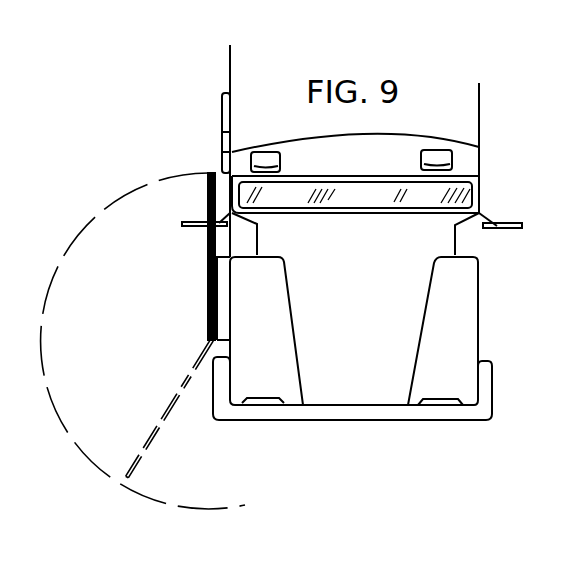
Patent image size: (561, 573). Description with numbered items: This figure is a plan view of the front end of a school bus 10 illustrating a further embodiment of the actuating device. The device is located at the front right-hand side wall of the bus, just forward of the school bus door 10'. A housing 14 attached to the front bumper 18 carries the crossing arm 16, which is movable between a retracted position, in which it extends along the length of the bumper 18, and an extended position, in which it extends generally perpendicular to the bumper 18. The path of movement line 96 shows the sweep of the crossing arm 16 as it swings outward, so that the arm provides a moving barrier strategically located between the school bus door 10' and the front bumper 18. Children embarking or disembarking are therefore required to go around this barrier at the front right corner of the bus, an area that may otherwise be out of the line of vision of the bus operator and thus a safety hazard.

The school bus 10 is at (388, 151).
The school bus door 10' is at (201, 133).
The housing 14 is at (222, 316).
The crossing arm 16 is at (207, 248).
The front bumper 18 is at (488, 386).
The path of movement line 96 is at (143, 187).